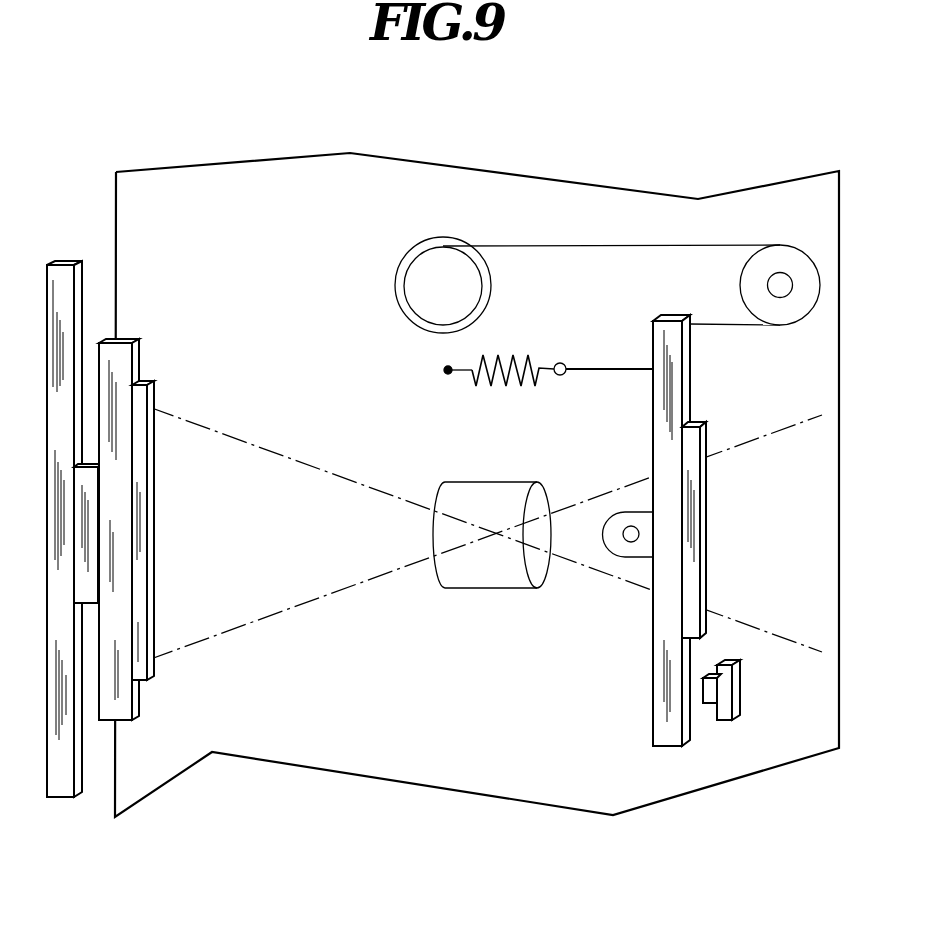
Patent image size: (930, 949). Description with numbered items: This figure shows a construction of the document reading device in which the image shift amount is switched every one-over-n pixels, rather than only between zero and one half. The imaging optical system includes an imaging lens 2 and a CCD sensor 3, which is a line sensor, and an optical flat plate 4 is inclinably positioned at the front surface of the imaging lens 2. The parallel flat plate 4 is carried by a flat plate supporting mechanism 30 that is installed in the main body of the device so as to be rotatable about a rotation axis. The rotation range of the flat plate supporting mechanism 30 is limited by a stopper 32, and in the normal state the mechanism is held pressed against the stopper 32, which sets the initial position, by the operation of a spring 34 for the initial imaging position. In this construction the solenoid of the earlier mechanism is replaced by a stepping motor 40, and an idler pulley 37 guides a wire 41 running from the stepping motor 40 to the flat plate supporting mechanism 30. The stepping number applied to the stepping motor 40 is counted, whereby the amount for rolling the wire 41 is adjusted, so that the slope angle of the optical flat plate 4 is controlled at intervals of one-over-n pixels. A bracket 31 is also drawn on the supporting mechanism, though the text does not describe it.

The imaging lens 2 is at (515, 590).
The CCD sensor 3 is at (138, 707).
The optical flat plate 4 is at (706, 532).
The flat plate supporting mechanism 30 is at (652, 722).
The bracket 31 is at (631, 542).
The stopper 32 is at (742, 690).
The spring 34 is at (540, 360).
The idler pulley 37 is at (791, 245).
The stepping motor 40 is at (393, 292).
The wire 41 is at (515, 247).